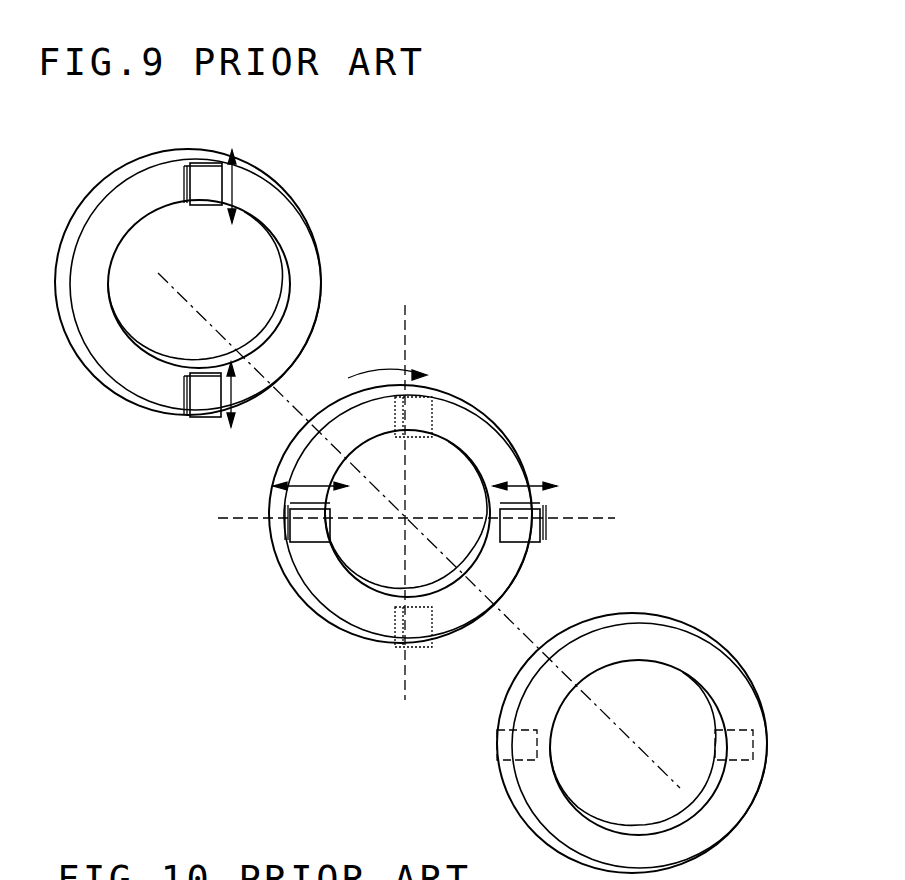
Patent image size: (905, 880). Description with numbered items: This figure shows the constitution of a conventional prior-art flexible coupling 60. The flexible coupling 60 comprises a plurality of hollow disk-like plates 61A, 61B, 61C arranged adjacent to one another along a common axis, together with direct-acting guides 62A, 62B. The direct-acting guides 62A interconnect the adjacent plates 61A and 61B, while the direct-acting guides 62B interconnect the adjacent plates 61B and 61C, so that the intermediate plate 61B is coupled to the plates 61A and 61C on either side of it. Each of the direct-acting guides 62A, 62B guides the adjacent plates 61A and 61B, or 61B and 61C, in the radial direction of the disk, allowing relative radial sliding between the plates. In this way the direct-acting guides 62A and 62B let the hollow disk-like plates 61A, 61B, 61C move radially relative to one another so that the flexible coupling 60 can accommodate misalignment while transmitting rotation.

The flexible coupling 60 is at (550, 408).
The hollow disk-like plate 61A is at (657, 633).
The hollow disk-like plate 61B is at (343, 600).
The hollow disk-like plate 61C is at (275, 205).
The direct-acting guide 62A is at (303, 512).
The direct-acting guide 62B is at (198, 183).